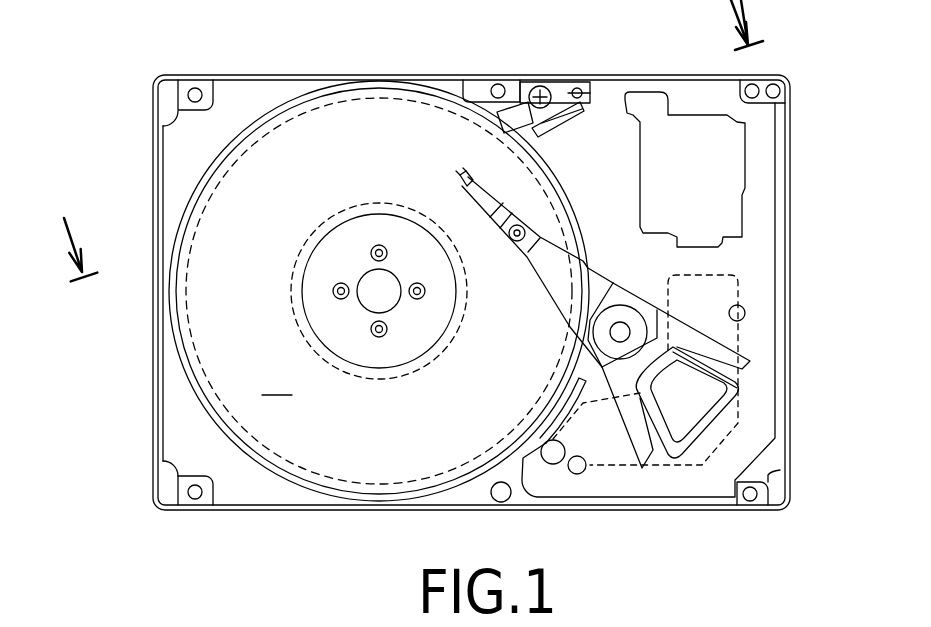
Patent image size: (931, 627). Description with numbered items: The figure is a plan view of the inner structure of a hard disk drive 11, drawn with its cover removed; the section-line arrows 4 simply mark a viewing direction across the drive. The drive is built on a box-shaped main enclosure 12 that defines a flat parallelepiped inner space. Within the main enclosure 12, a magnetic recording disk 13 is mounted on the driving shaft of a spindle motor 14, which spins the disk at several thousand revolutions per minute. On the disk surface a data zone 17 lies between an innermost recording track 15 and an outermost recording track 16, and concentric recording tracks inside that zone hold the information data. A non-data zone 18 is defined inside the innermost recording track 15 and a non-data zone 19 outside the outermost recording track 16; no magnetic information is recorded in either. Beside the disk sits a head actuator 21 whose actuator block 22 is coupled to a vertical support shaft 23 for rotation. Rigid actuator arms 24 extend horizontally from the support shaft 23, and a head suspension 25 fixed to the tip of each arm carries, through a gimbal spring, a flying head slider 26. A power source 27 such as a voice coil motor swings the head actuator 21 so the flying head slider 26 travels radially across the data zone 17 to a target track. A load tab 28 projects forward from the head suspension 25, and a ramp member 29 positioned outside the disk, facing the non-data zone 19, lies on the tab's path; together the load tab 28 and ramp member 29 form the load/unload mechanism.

The section line 4- 4 is at (402, 140).
The hard disk drive 11 is at (300, 73).
The main enclosure 12 is at (790, 450).
The magnetic recording disk 13 is at (176, 257).
The spindle motor 14 is at (368, 305).
The innermost recording track 15 is at (293, 278).
The outermost recording track 16 is at (190, 300).
The data zone 17 is at (272, 377).
The non-data zone 18 is at (304, 258).
The non-data zone 19 is at (186, 346).
The head actuator 21 is at (600, 373).
The actuator block 22 is at (620, 287).
The vertical support shaft 23 is at (648, 322).
The actuator arms 24 is at (556, 303).
The head suspension 25 is at (506, 228).
The flying head slider 26 is at (477, 166).
The power source 27 is at (742, 383).
The load tab 28 is at (458, 175).
The ramp member 29 is at (576, 83).